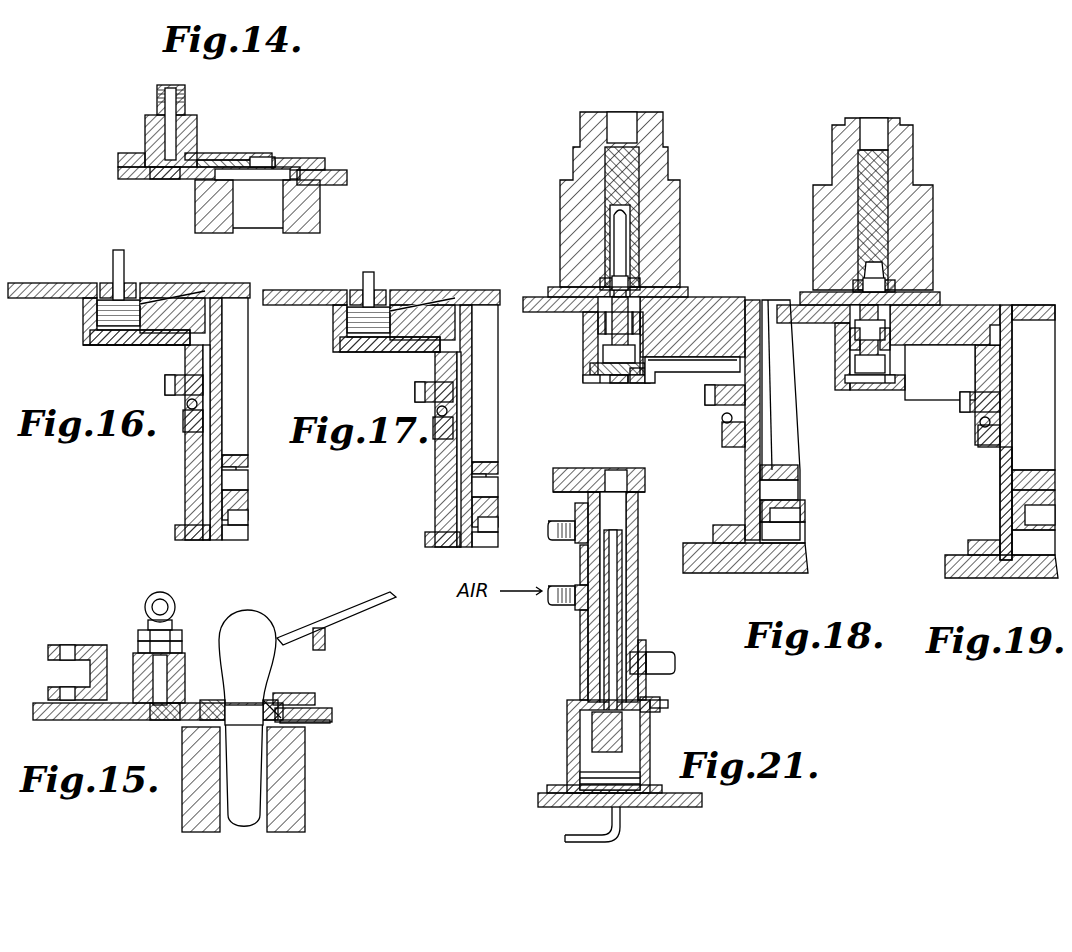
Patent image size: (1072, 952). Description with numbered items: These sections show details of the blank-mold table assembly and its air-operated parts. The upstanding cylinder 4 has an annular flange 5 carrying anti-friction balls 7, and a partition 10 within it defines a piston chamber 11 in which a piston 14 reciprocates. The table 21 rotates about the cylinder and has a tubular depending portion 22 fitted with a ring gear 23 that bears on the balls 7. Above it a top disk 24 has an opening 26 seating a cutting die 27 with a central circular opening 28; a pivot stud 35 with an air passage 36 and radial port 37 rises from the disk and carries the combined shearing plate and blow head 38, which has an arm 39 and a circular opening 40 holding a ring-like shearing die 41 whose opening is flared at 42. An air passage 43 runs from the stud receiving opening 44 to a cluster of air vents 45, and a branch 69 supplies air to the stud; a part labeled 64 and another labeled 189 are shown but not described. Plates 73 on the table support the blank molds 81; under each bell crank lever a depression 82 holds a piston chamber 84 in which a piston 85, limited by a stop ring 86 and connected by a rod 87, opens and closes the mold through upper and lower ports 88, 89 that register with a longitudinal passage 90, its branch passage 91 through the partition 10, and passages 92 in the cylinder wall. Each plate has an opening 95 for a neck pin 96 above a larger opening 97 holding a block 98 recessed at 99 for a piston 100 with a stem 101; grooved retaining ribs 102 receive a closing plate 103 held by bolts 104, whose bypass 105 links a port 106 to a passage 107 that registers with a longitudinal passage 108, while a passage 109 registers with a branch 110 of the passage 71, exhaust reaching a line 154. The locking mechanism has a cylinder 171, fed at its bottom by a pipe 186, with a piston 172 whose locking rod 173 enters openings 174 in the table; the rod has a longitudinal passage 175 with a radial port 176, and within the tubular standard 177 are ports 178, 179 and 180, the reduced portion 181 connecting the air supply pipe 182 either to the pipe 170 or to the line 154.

In FIG. 16, the cylinder 4 is at (240, 283).
In FIG. 19, the cylinder 4 is at (995, 470).
In FIG. 16, the annular flange 5 is at (185, 432).
In FIG. 17, the annular flange 5 is at (437, 444).
In FIG. 18, the annular flange 5 is at (730, 447).
In FIG. 19, the annular flange 5 is at (978, 445).
In FIG. 16, the anti-friction balls 7 is at (188, 408).
In FIG. 17, the anti-friction balls 7 is at (427, 433).
In FIG. 18, the anti-friction balls 7 is at (722, 422).
In FIG. 19, the anti-friction balls 7 is at (980, 424).
In FIG. 16, the partition 10 is at (245, 468).
In FIG. 17, the partition 10 is at (378, 478).
In FIG. 16, the piston chamber 11 is at (245, 485).
In FIG. 17, the piston chamber 11 is at (504, 488).
In FIG. 18, the piston chamber 11 is at (775, 490).
In FIG. 19, the piston chamber 11 is at (1000, 532).
In FIG. 16, the piston 14 is at (248, 505).
In FIG. 17, the piston 14 is at (482, 522).
In FIG. 18, the piston 14 is at (800, 510).
In FIG. 19, the piston 14 is at (1040, 520).
In FIG. 21, the piston 14 is at (548, 528).
In FIG. 16, the table 21 is at (58, 283).
In FIG. 19, the table 21 is at (785, 305).
In FIG. 21, the table 21 is at (645, 484).
In FIG. 16, the tubular depending portion 22 is at (205, 352).
In FIG. 17, the tubular depending portion 22 is at (423, 449).
In FIG. 18, the tubular depending portion 22 is at (730, 305).
In FIG. 19, the tubular depending portion 22 is at (985, 376).
In FIG. 16, the ring gear 23 is at (165, 384).
In FIG. 17, the ring gear 23 is at (412, 392).
In FIG. 18, the ring gear 23 is at (712, 405).
In FIG. 19, the ring gear 23 is at (965, 412).
In FIG. 14, the top disk 24 is at (347, 176).
In FIG. 15, the top disk 24 is at (332, 714).
In FIG. 15, the opening 26 is at (300, 722).
In FIG. 15, the cutting die 27 is at (285, 710).
In FIG. 15, the central circular opening 28 is at (245, 712).
In FIG. 14, the pivot stud 35 is at (145, 130).
In FIG. 15, the pivot stud 35 is at (133, 660).
In FIG. 14, the air passage 36 is at (180, 118).
In FIG. 15, the air passage 36 is at (180, 666).
In FIG. 14, the port 37 is at (168, 179).
In FIG. 15, the port 37 is at (162, 722).
In FIG. 14, the combined shearing plate and blow head 38 is at (325, 158).
In FIG. 15, the combined shearing plate and blow head 38 is at (315, 697).
In FIG. 15, the arm 39 is at (97, 703).
In FIG. 15, the circular opening 40 is at (272, 705).
In FIG. 15, the shearing die 41 is at (278, 700).
In FIG. 15, the flared opening 42 is at (247, 718).
In FIG. 14, the air passage 43 is at (235, 160).
In FIG. 14, the stud receiving opening 44 is at (205, 153).
In FIG. 14, the air vents 45 is at (268, 160).
In FIG. 15, the lever 64 is at (326, 634).
In FIG. 15, the branch 69 is at (168, 598).
In FIG. 19, the passage 71 is at (1015, 312).
In FIG. 18, the plates 73 is at (548, 290).
In FIG. 19, the plates 73 is at (940, 298).
In FIG. 14, the blank molds 81 is at (308, 212).
In FIG. 15, the blank molds 81 is at (305, 780).
In FIG. 18, the blank molds 81 is at (655, 180).
In FIG. 19, the blank molds 81 is at (915, 182).
In FIG. 16, the depression 82 is at (95, 343).
In FIG. 16, the piston chamber 84 is at (87, 335).
In FIG. 17, the piston chamber 84 is at (351, 303).
In FIG. 16, the piston 85 is at (97, 316).
In FIG. 17, the piston 85 is at (342, 323).
In FIG. 16, the stop ring 86 is at (106, 283).
In FIG. 17, the stop ring 86 is at (398, 281).
In FIG. 16, the rod 87 is at (124, 272).
In FIG. 17, the rod 87 is at (388, 279).
In FIG. 16, the upper port 88 is at (175, 300).
In FIG. 17, the upper port 88 is at (445, 401).
In FIG. 16, the lower port 89 is at (150, 338).
In FIG. 17, the lower port 89 is at (390, 355).
In FIG. 16, the longitudinal passage 90 is at (208, 380).
In FIG. 16, the branch passage 91 is at (242, 458).
In FIG. 17, the branch passage 91 is at (379, 456).
In FIG. 18, the branch passage 91 is at (615, 328).
In FIG. 17, the passage 92 is at (496, 449).
In FIG. 18, the opening 95 is at (612, 285).
In FIG. 19, the opening 95 is at (860, 290).
In FIG. 18, the neck pin 96 is at (635, 280).
In FIG. 19, the neck pin 96 is at (870, 320).
In FIG. 19, the larger opening 97 is at (862, 330).
In FIG. 18, the block 98 is at (655, 330).
In FIG. 19, the block 98 is at (840, 385).
In FIG. 18, the recess 99 is at (592, 368).
In FIG. 19, the recess 99 is at (898, 292).
In FIG. 18, the piston 100 is at (603, 352).
In FIG. 19, the piston 100 is at (868, 373).
In FIG. 18, the stem 101 is at (598, 340).
In FIG. 19, the stem 101 is at (852, 345).
In FIG. 18, the grooved retaining ribs 102 is at (598, 382).
In FIG. 19, the grooved retaining ribs 102 is at (855, 385).
In FIG. 18, the closing plate 103 is at (603, 383).
In FIG. 19, the closing plate 103 is at (962, 398).
In FIG. 18, the bolts 104 is at (625, 383).
In FIG. 19, the bolts 104 is at (885, 385).
In FIG. 18, the bypass 105 is at (620, 383).
In FIG. 18, the port 106 is at (640, 383).
In FIG. 18, the passage 107 is at (690, 362).
In FIG. 18, the longitudinal passage 108 is at (770, 444).
In FIG. 19, the passage 109 is at (940, 372).
In FIG. 19, the branch 110 is at (995, 340).
In FIG. 21, the line 154 is at (575, 508).
In FIG. 21, the pipe 170 is at (676, 663).
In FIG. 21, the cylinder 171 is at (567, 735).
In FIG. 21, the piston 172 is at (625, 772).
In FIG. 21, the locking rod 173 is at (618, 580).
In FIG. 21, the openings 174 is at (615, 478).
In FIG. 21, the longitudinal passage 175 is at (625, 560).
In FIG. 21, the radial port 176 is at (645, 697).
In FIG. 21, the tubular standard 177 is at (640, 630).
In FIG. 21, the port 178 is at (580, 605).
In FIG. 21, the port 179 is at (580, 548).
In FIG. 21, the port 180 is at (646, 648).
In FIG. 21, the reduced portion 181 is at (583, 640).
In FIG. 21, the air supply pipe 182 is at (558, 598).
In FIG. 21, the pipe 186 is at (560, 828).
In FIG. 21, the outlet 189 is at (668, 702).